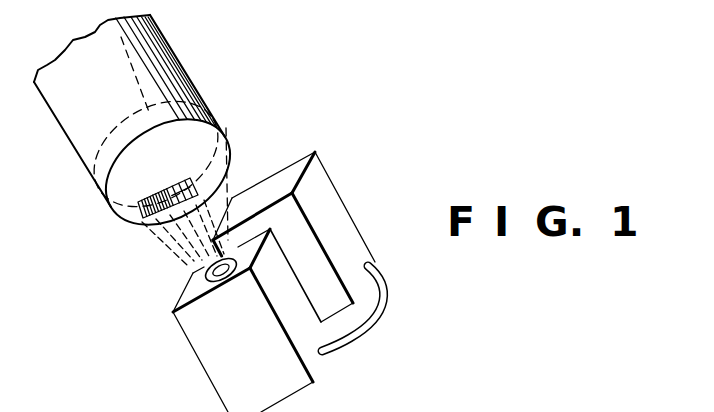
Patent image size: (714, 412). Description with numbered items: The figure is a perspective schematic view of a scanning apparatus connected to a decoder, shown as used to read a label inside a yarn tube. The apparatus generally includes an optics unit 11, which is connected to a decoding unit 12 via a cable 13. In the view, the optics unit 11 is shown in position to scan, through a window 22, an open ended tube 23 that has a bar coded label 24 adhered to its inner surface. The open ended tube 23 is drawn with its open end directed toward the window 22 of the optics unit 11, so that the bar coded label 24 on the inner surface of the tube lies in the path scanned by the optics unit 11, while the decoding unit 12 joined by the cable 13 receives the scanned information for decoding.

The optics unit 11 is at (238, 343).
The decoding unit 12 is at (341, 241).
The cable 13 is at (367, 314).
The window 22 is at (203, 274).
The open ended tube 23 is at (113, 101).
The bar coded label 24 is at (142, 216).